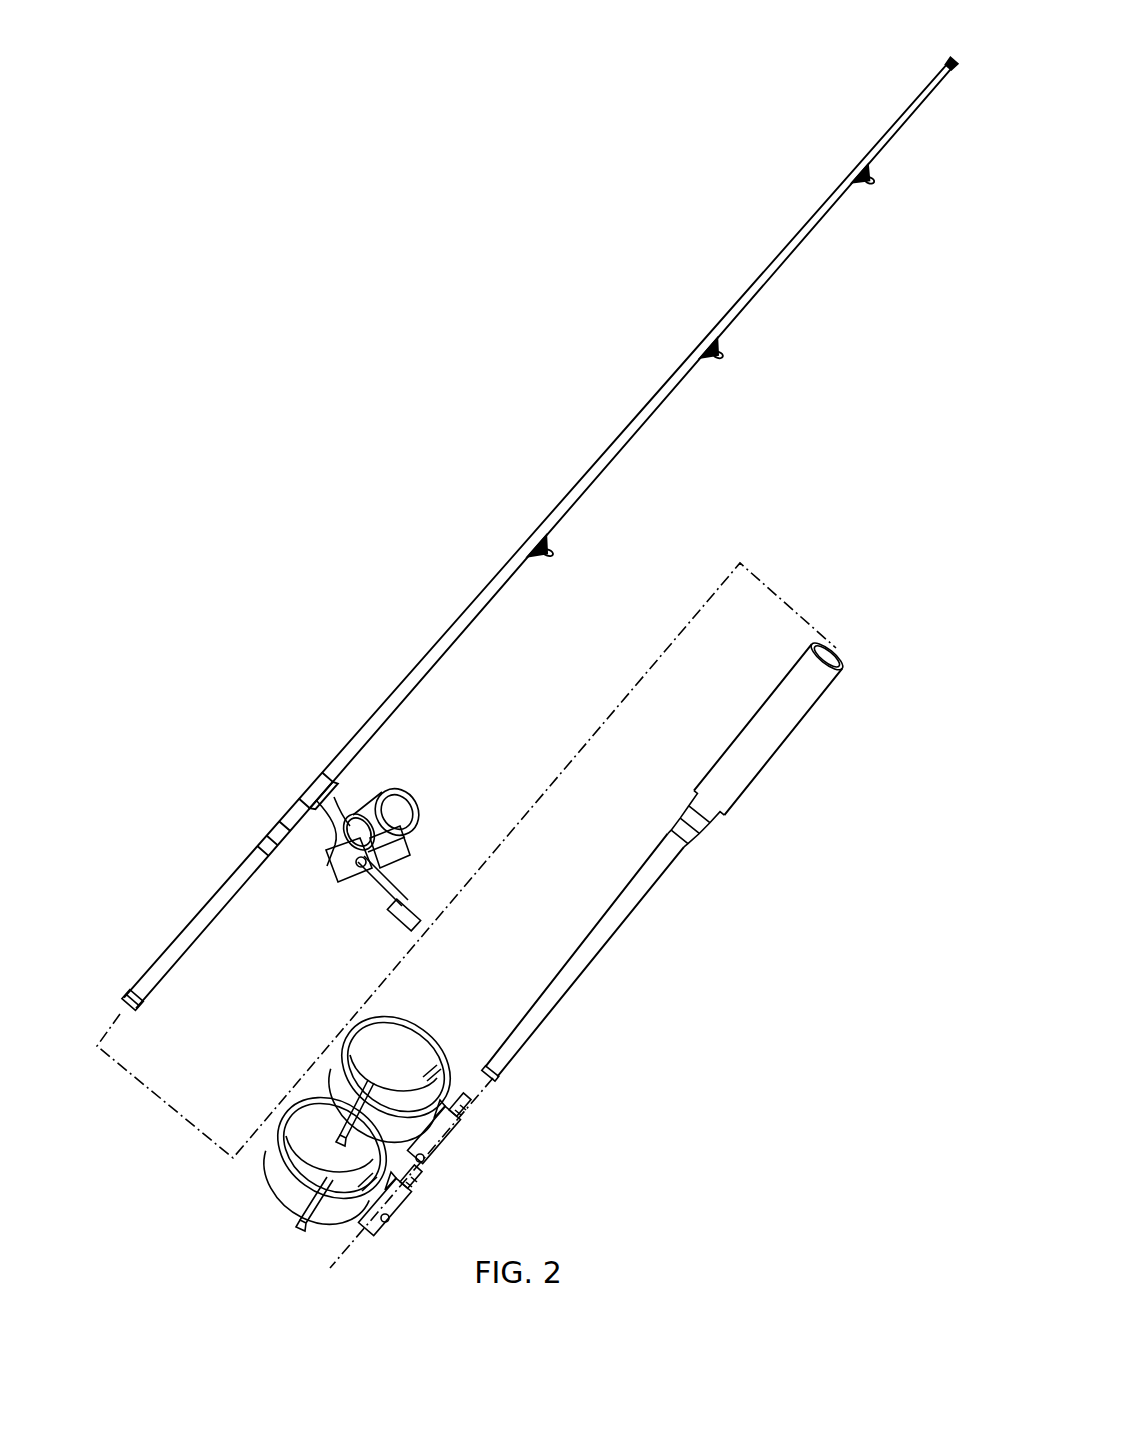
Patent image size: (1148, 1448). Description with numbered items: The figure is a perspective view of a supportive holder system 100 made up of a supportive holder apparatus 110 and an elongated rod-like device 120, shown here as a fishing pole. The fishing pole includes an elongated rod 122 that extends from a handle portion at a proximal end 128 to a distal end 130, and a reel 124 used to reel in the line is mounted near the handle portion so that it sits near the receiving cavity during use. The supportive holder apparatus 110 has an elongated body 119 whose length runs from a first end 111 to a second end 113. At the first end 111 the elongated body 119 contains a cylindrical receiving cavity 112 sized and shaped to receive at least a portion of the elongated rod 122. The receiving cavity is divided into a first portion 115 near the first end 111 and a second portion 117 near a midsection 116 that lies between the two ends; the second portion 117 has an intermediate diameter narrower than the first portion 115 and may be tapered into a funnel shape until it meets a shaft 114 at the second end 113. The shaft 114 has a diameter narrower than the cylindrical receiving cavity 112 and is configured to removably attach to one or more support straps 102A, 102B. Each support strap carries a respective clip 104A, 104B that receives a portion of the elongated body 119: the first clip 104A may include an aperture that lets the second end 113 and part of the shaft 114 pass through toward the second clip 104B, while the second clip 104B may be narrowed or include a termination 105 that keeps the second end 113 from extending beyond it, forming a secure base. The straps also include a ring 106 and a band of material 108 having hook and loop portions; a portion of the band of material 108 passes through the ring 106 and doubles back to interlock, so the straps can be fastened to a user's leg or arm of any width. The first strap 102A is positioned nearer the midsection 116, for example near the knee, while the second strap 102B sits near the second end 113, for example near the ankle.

The supportive holder system 100 is at (332, 342).
The elongated rod-like device 120 is at (380, 610).
The elongated rod 122 is at (640, 418).
The reel 124 is at (420, 808).
The proximal end 128 is at (123, 1000).
The distal end 130 is at (947, 60).
The supportive holder apparatus 110 is at (737, 868).
The first end 111 is at (845, 660).
The cylindrical receiving cavity 112 is at (812, 703).
The second end 113 is at (492, 1077).
The shaft 114 is at (628, 923).
The first portion 115 is at (778, 712).
The midsection 116 is at (705, 827).
The second portion 117 is at (693, 815).
The elongated body 119 is at (573, 980).
The termination 105 is at (352, 1248).
The first strap 102A is at (348, 1075).
The second strap 102B is at (272, 1165).
The first clip 104A is at (472, 1117).
The second clip 104B is at (403, 1213).
The ring 106 is at (310, 1218).
The band of material 108 is at (428, 1058).